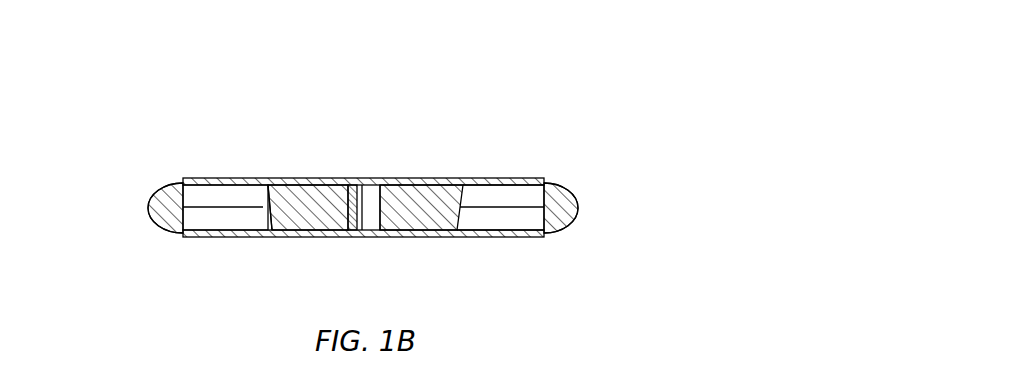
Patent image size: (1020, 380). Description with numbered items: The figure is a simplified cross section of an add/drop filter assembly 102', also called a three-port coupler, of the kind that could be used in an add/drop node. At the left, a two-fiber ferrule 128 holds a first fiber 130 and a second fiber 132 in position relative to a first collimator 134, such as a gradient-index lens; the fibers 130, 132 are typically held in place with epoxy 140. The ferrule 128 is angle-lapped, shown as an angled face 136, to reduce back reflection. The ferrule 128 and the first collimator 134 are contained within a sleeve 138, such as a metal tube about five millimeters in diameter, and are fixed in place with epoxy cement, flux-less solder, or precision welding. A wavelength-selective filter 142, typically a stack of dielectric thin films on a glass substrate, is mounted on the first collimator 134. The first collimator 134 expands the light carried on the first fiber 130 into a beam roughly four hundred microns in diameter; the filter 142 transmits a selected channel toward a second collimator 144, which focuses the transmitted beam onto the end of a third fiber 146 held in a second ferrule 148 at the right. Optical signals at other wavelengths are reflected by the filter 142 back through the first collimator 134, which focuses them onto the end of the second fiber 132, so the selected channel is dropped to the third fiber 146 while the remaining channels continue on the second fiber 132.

The add/drop filter assembly 102' is at (364, 161).
The 2-fiber ferrule 128 is at (238, 195).
The first fiber 130 is at (153, 208).
The second fiber 132 is at (152, 220).
The first collimator 134 is at (313, 190).
The angled face 136 is at (266, 195).
The sleeve 138 is at (510, 177).
The epoxy 140 is at (166, 186).
The wavelength-selective filter 142 is at (353, 187).
The second collimator 144 is at (417, 222).
The third fiber 146 is at (580, 197).
The second ferrule 148 is at (490, 192).